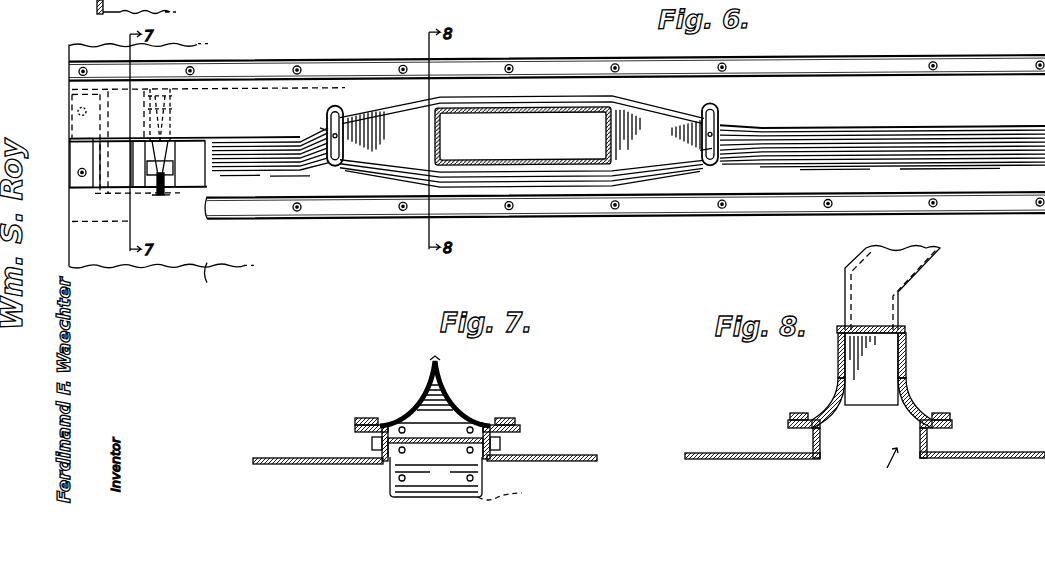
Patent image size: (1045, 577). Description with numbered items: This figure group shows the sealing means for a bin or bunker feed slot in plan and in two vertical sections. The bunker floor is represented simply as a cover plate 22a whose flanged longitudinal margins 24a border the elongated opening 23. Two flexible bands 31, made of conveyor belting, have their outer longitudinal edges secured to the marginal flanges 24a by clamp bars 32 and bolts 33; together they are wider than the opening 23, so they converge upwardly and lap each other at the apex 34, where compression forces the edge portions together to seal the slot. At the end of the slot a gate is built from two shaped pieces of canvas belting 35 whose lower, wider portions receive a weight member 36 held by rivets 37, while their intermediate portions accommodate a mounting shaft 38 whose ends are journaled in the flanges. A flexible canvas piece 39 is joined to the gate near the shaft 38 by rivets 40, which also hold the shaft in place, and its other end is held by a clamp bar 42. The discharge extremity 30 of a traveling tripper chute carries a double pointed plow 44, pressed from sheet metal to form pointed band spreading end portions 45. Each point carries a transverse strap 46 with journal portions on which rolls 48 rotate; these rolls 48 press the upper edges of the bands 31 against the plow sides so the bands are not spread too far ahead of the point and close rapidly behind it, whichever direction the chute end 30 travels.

In FIG. 6, the floor or cover plate 22a is at (221, 279).
In FIG. 7, the floor or cover plate 22a is at (289, 457).
In FIG. 8, the floor or cover plate 22a is at (718, 452).
In FIG. 8, the feed slot or elongated opening 23 is at (885, 469).
In FIG. 7, the flanged longitudinal margin 24a is at (355, 432).
In FIG. 8, the flanged longitudinal margin 24a is at (795, 430).
In FIG. 6, the discharge extremity of traveling tripper chute 30 is at (587, 123).
In FIG. 8, the discharge extremity of traveling tripper chute 30 is at (868, 404).
In FIG. 6, the flexible band 31 is at (915, 111).
In FIG. 7, the flexible band 31 is at (418, 394).
In FIG. 8, the flexible band 31 is at (834, 354).
In FIG. 6, the clamp bar 32 is at (905, 71).
In FIG. 7, the clamp bar 32 is at (365, 417).
In FIG. 8, the clamp bar 32 is at (792, 414).
In FIG. 6, the bolt 33 is at (828, 68).
In FIG. 6, the apex 34 is at (1024, 133).
In FIG. 7, the apex 34 is at (432, 358).
In FIG. 6, the piece of canvas belting 35 is at (151, 150).
In FIG. 7, the piece of canvas belting 35 is at (435, 435).
In FIG. 7, the weight member 36 is at (509, 496).
In FIG. 7, the rivet 37 is at (475, 478).
In FIG. 6, the mounting shaft 38 is at (173, 188).
In FIG. 7, the mounting shaft 38 is at (374, 453).
In FIG. 6, the flexible canvas piece 39 is at (126, 177).
In FIG. 7, the flexible canvas piece 39 is at (455, 447).
In FIG. 7, the rivet 40 is at (399, 453).
In FIG. 6, the clamp bar 42 is at (82, 149).
In FIG. 6, the double pointed plow 44 is at (635, 135).
In FIG. 6, the pointed band spreading end portion 45 is at (367, 128).
In FIG. 6, the transverse strap 46 is at (328, 127).
In FIG. 6, the roll 48 is at (342, 110).